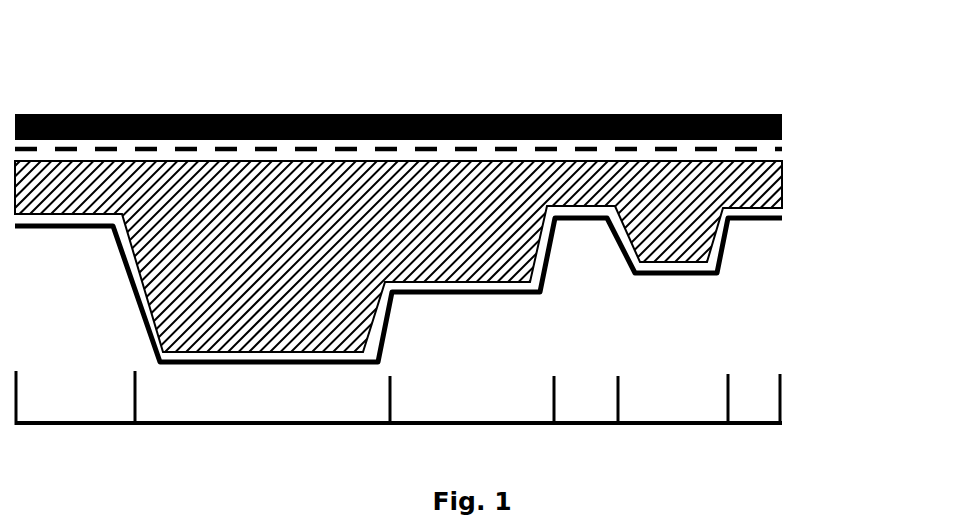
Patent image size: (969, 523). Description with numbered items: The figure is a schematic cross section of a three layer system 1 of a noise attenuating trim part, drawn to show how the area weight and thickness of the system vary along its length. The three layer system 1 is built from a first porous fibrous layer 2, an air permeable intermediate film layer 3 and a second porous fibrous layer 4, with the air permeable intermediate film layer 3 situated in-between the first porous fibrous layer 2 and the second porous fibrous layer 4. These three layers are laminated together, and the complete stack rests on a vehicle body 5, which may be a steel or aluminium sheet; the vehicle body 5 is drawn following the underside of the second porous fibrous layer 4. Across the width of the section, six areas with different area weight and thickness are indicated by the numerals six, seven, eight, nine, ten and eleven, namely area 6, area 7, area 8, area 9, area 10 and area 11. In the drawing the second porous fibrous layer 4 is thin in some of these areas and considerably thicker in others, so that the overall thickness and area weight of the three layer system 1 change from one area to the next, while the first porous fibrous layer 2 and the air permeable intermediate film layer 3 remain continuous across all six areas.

The three layer system 1 is at (668, 97).
The first porous fibrous layer 2 is at (792, 125).
The air permeable intermediate film layer 3 is at (783, 150).
The second porous fibrous layer 4 is at (798, 186).
The vehicle body 5 is at (790, 223).
The area with different area weight and thickness 6 is at (75, 419).
The area with different area weight and thickness 7 is at (262, 422).
The area with different area weight and thickness 8 is at (472, 422).
The area with different area weight and thickness 9 is at (586, 422).
The area with different area weight and thickness 10 is at (673, 421).
The area with different area weight and thickness 11 is at (755, 421).